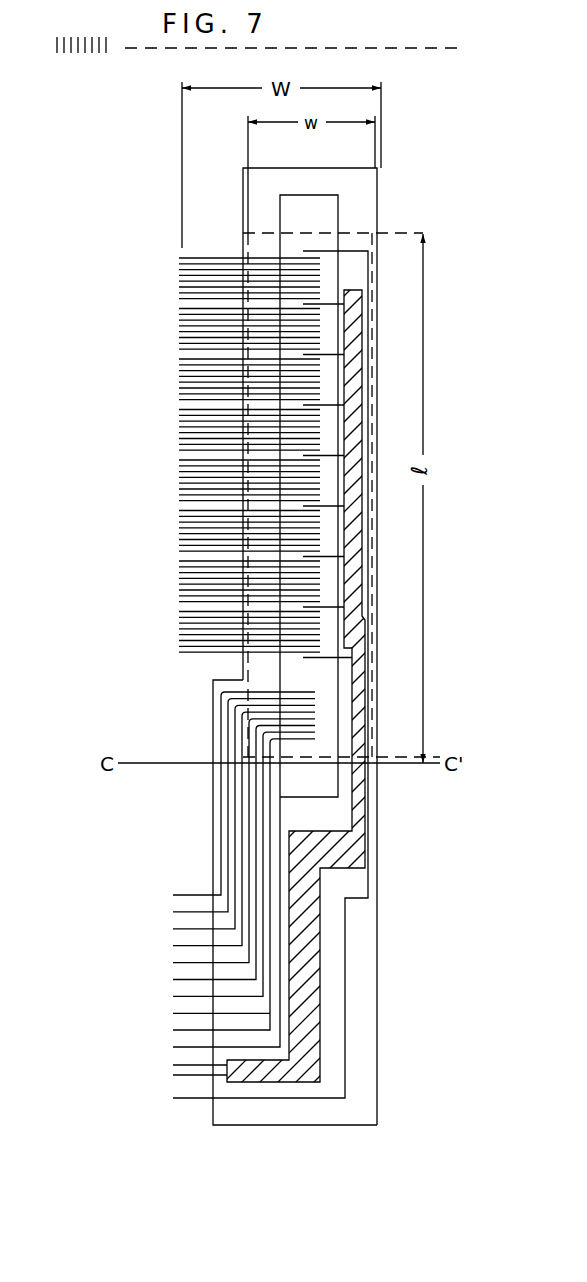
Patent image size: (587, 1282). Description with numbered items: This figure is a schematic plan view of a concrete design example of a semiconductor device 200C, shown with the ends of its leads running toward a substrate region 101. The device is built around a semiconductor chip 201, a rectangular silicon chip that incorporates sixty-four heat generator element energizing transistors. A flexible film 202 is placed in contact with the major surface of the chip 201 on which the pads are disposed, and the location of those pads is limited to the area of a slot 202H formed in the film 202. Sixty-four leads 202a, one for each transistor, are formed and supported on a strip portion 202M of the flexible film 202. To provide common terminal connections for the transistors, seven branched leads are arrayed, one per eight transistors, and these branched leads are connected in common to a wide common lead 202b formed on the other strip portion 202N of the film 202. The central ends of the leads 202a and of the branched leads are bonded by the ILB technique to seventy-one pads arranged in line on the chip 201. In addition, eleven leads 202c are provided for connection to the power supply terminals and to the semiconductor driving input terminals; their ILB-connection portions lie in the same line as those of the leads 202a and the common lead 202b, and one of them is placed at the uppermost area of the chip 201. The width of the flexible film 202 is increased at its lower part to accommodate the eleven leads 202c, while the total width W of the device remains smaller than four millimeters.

The substrate 101 is at (75, 36).
The semiconductor device 200C is at (162, 126).
The semiconductor chip 201 is at (358, 232).
The flexible film 202 is at (315, 1126).
The slot 202H is at (296, 207).
The strip portion 202M is at (262, 247).
The other strip portion 202N is at (358, 268).
The leads 202a is at (165, 258).
The common lead 202b is at (310, 1028).
The additional leads 202c is at (160, 893).